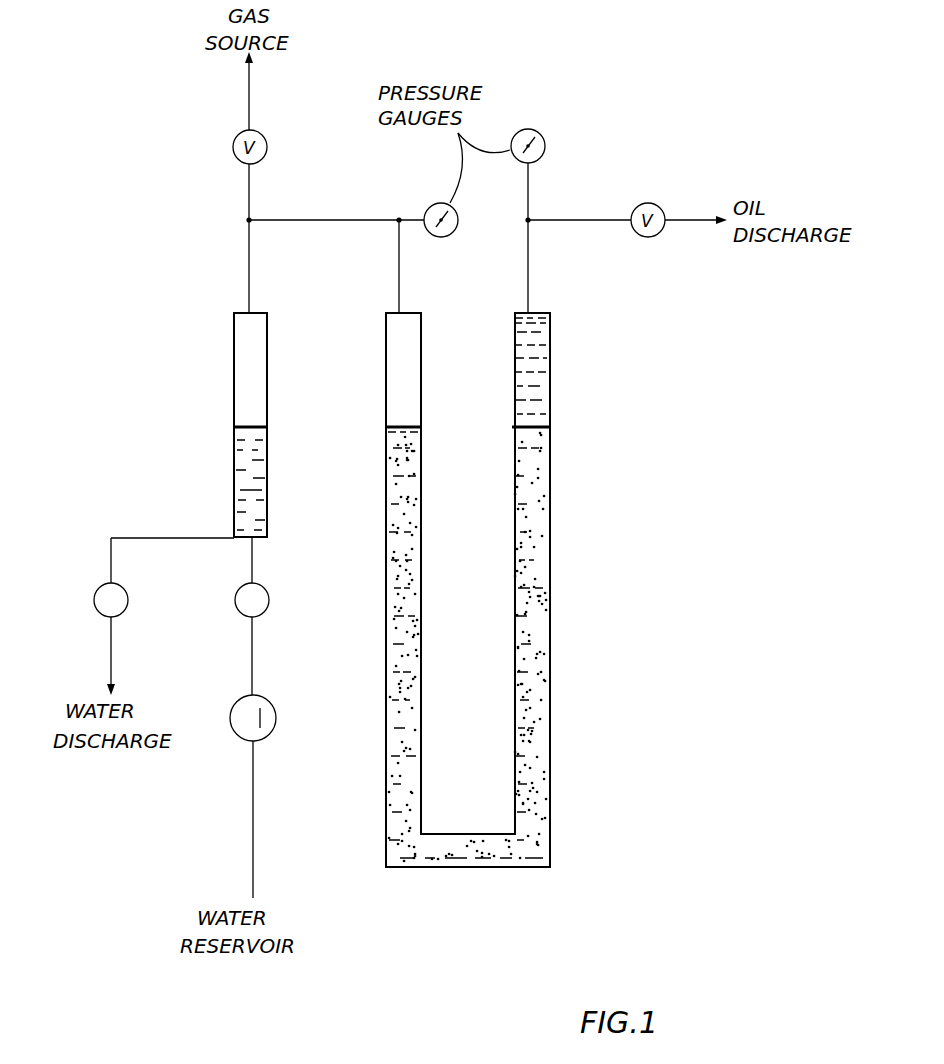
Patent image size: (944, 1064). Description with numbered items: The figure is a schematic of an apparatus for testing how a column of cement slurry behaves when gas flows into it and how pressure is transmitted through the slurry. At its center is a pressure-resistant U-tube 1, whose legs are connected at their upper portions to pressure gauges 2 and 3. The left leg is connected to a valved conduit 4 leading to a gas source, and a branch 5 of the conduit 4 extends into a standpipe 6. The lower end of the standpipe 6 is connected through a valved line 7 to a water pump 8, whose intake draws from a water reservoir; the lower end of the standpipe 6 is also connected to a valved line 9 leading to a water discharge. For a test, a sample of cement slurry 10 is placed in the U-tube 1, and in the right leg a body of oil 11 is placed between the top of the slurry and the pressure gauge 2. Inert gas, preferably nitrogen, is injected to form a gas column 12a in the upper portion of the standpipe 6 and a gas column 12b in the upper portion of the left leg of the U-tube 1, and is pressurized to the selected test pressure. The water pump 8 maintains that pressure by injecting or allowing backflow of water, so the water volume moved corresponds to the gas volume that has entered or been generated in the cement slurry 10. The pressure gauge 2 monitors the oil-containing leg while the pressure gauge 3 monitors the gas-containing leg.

The U-tube 1 is at (550, 335).
The pressure gauge 2 is at (545, 143).
The pressure gauge 3 is at (458, 225).
The valved conduit 4 is at (338, 219).
The branch 5 is at (250, 256).
The standpipe 6 is at (234, 320).
The valved line 7 is at (253, 657).
The water pump 8 is at (272, 731).
The water discharge line 9 is at (180, 538).
The cement slurry 10 is at (543, 522).
The body of oil 11 is at (543, 384).
The gas column 12a is at (242, 367).
The gas column 12b is at (400, 380).